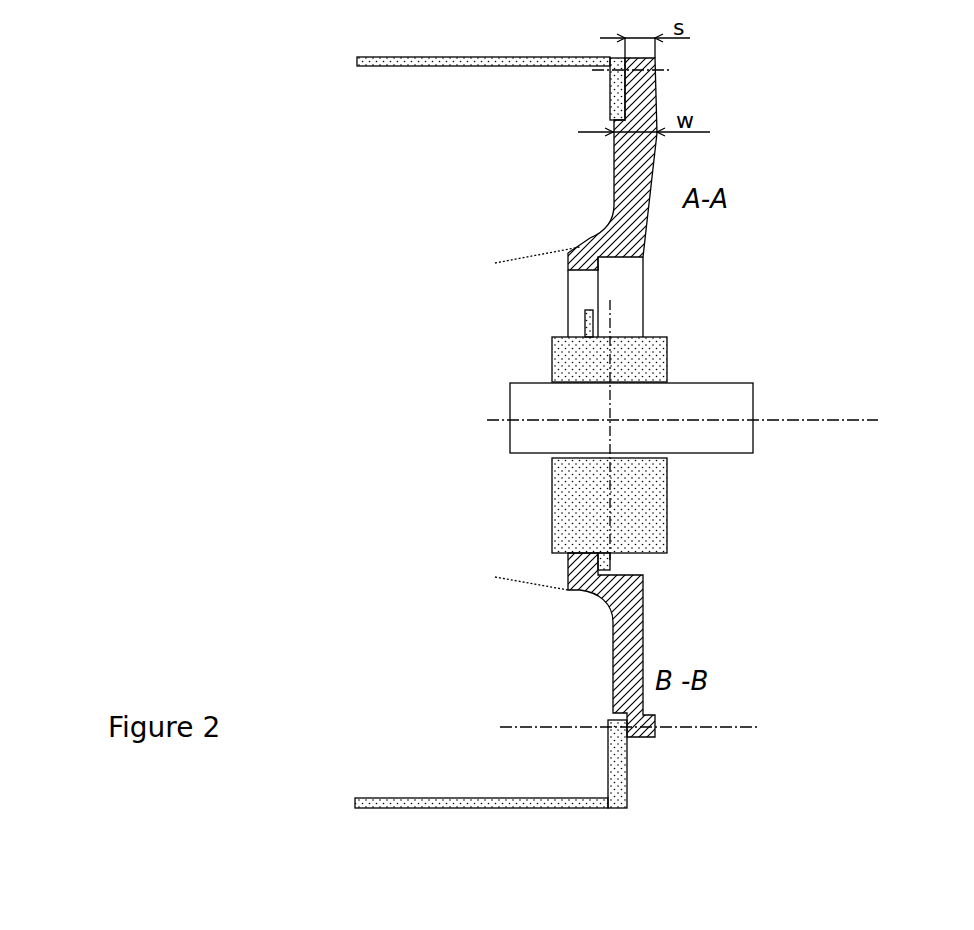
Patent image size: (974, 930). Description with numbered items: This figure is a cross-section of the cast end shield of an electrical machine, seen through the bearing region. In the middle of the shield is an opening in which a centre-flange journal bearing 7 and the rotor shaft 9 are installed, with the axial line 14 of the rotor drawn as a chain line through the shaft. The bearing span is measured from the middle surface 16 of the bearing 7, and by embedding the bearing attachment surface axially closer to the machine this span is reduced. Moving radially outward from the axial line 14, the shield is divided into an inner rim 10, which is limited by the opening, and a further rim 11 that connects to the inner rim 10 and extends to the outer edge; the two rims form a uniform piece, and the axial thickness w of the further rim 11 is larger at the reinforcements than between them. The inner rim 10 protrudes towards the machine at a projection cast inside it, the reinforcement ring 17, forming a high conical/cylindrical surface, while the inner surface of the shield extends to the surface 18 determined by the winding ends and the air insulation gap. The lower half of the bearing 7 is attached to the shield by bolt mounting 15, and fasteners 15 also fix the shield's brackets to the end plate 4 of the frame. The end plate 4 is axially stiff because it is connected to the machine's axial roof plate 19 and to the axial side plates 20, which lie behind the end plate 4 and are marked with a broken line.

The end plate 4 is at (683, 790).
The centre-flange journal bearing 7 is at (643, 508).
The rotor shaft 9 is at (710, 393).
The inner rim 10 is at (600, 264).
The further rim 11 is at (652, 172).
The axial line of the rotor 14 is at (863, 420).
The bolt mounting 15 is at (800, 668).
The middle surface of the bearing 16 is at (612, 532).
The reinforcement ring 17 is at (575, 245).
The surface determined by the winding ends 18 is at (530, 585).
The axial roof plate 19 is at (493, 61).
The axial side plates 20 is at (445, 805).